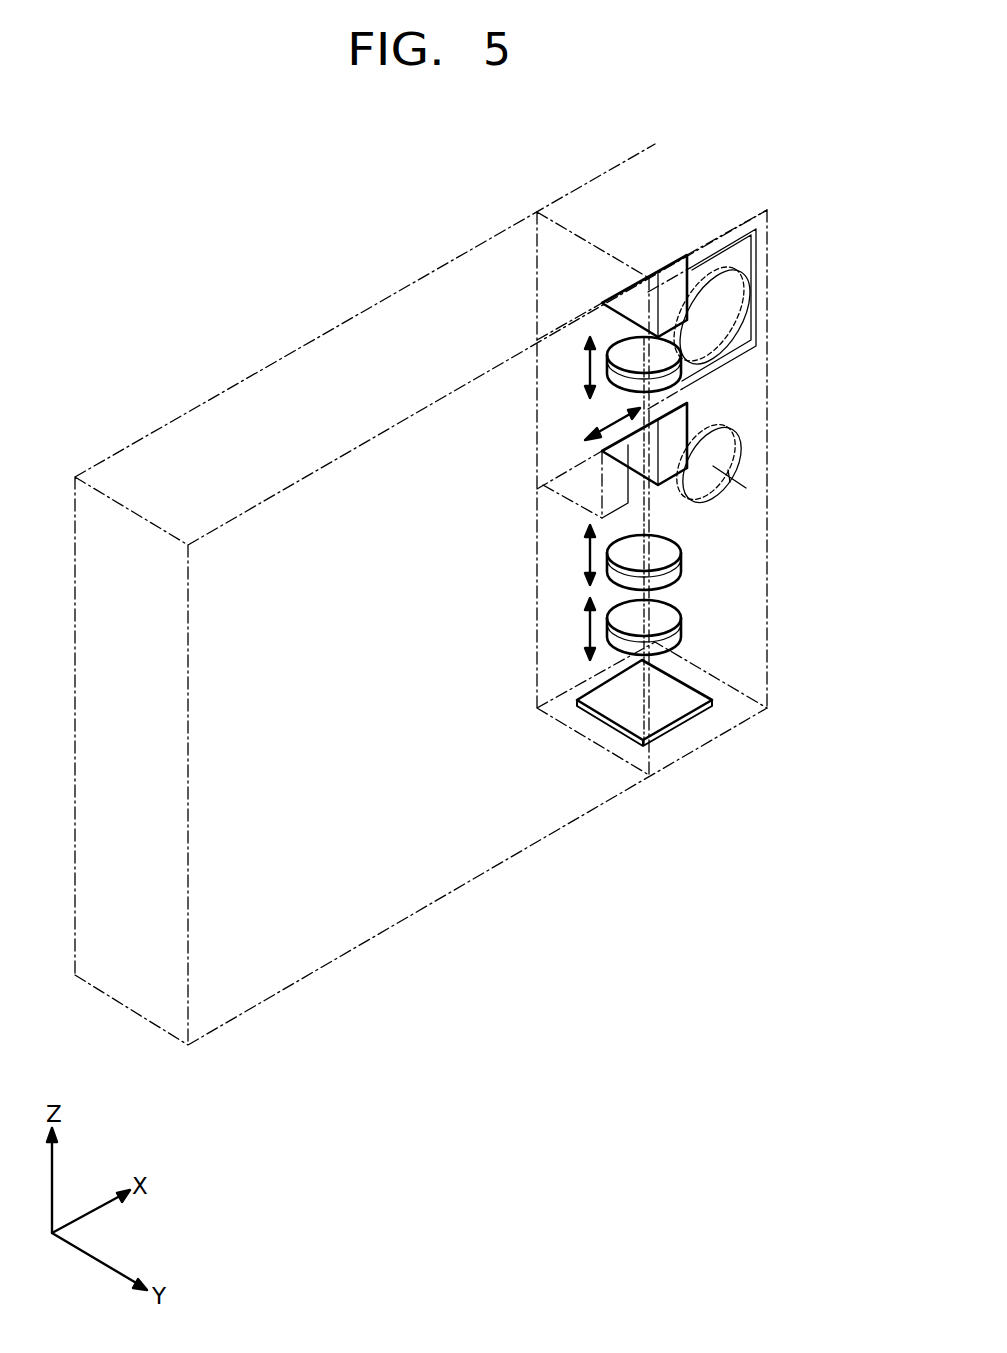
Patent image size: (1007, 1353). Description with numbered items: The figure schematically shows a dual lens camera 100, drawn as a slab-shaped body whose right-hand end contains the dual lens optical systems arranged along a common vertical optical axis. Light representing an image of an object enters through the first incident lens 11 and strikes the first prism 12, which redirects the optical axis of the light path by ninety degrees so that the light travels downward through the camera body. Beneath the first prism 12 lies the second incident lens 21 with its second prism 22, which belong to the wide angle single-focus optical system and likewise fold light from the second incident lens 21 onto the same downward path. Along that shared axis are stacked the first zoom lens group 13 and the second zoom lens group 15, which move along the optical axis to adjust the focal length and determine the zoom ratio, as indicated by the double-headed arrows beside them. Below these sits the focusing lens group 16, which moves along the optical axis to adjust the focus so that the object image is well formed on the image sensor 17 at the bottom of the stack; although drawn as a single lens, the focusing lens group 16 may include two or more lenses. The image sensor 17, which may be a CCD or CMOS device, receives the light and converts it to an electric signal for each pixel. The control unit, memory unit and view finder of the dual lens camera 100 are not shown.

The dual lens camera 100 is at (305, 357).
The first prism 12 is at (632, 312).
The first incident lens 11 is at (723, 308).
The second prism 22 is at (682, 427).
The second incident lens 21 is at (720, 453).
The first zoom lens group 13 is at (620, 393).
The second zoom lens group 15 is at (677, 562).
The focusing lens group 16 is at (677, 627).
The image sensor 17 is at (680, 688).